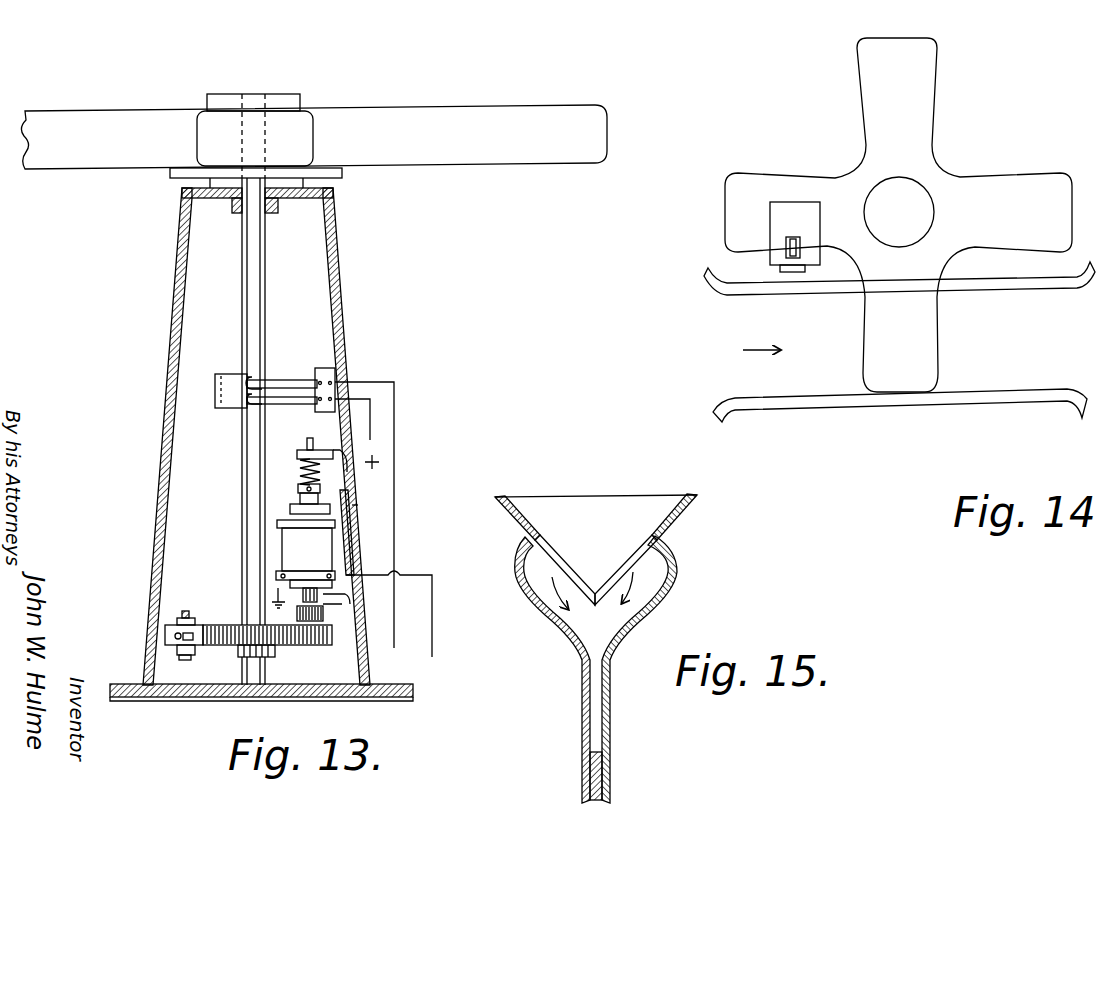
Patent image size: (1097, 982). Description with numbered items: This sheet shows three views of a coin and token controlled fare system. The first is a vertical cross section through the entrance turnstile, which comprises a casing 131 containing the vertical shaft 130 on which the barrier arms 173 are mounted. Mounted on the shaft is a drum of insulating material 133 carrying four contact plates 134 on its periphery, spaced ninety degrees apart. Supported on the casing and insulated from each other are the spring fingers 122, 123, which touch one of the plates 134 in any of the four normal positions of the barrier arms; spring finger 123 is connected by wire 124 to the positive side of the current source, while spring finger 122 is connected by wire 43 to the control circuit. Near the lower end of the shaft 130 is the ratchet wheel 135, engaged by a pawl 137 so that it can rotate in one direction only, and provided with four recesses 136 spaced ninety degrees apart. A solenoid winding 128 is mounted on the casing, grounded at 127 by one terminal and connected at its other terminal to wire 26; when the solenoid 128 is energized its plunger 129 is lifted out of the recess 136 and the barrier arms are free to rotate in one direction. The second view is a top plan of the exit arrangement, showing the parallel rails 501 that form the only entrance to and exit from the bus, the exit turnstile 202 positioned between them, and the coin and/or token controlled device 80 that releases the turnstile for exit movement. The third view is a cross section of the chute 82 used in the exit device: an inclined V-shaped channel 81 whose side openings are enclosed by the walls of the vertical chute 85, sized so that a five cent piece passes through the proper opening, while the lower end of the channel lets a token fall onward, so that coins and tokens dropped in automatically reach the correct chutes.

In FIG. 13, the barrier arms 173 is at (500, 165).
In FIG. 13, the casing 131 is at (340, 290).
In FIG. 13, the shaft 130 is at (244, 513).
In FIG. 13, the drum of insulating material 133 is at (232, 406).
In FIG. 13, the contact plates 134 is at (242, 383).
In FIG. 13, the spring finger 122 is at (305, 381).
In FIG. 13, the spring finger 123 is at (298, 404).
In FIG. 13, the wire 124 is at (372, 437).
In FIG. 13, the solenoid winding 128 is at (305, 561).
In FIG. 13, the ground 127 is at (273, 597).
In FIG. 13, the plunger 129 is at (331, 637).
In FIG. 13, the ratchet wheel 135 is at (290, 645).
In FIG. 13, the recesses 136 is at (228, 615).
In FIG. 13, the pawl 137 is at (183, 650).
In FIG. 13, the wire 26 is at (432, 627).
In FIG. 13, the wire 43 is at (394, 636).
In FIG. 14, the cross member 202 is at (898, 215).
In FIG. 14, the coin and/or token controlled device 80 is at (770, 222).
In FIG. 14, the parallel rails 501 is at (797, 406).
In FIG. 15, the chute 82 is at (678, 505).
In FIG. 15, the inclined V-shaped channel 81 is at (527, 519).
In FIG. 15, the vertical chute 85 is at (650, 604).